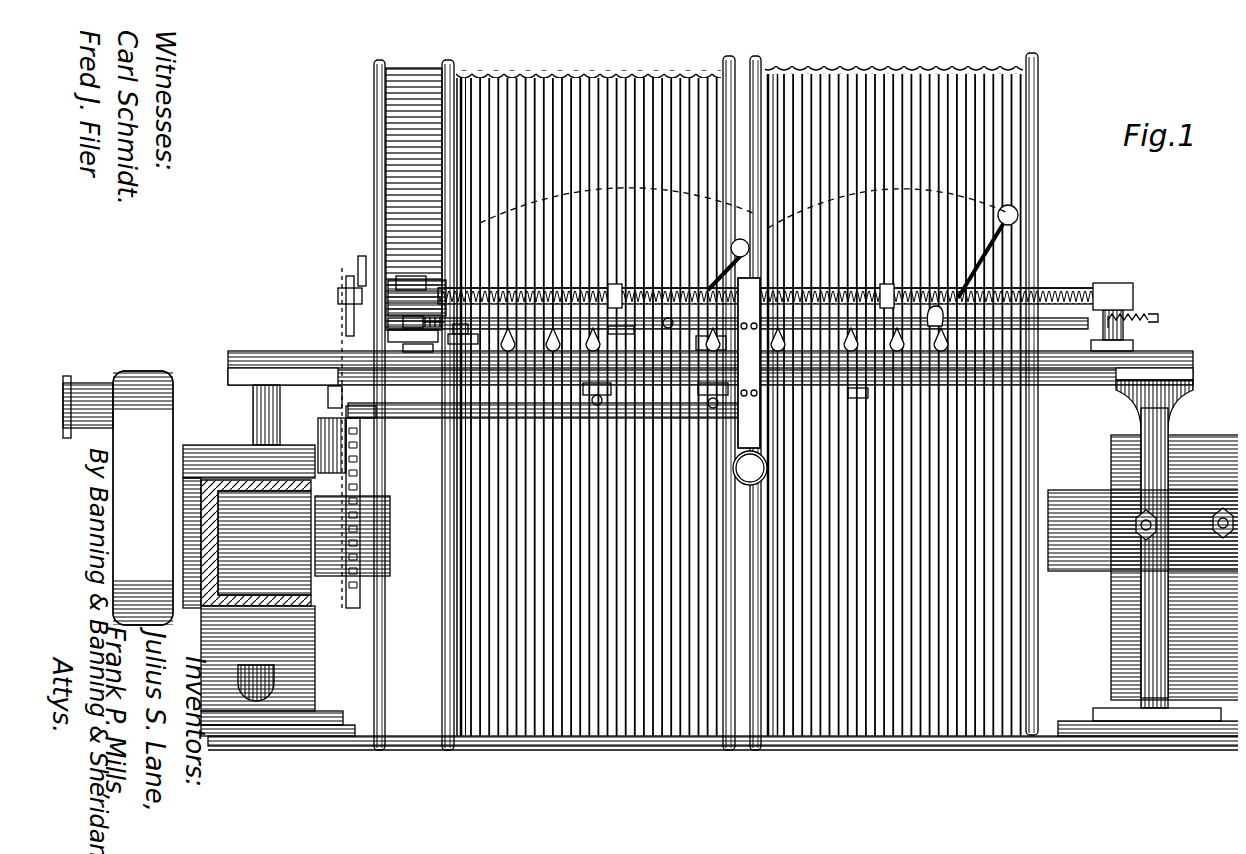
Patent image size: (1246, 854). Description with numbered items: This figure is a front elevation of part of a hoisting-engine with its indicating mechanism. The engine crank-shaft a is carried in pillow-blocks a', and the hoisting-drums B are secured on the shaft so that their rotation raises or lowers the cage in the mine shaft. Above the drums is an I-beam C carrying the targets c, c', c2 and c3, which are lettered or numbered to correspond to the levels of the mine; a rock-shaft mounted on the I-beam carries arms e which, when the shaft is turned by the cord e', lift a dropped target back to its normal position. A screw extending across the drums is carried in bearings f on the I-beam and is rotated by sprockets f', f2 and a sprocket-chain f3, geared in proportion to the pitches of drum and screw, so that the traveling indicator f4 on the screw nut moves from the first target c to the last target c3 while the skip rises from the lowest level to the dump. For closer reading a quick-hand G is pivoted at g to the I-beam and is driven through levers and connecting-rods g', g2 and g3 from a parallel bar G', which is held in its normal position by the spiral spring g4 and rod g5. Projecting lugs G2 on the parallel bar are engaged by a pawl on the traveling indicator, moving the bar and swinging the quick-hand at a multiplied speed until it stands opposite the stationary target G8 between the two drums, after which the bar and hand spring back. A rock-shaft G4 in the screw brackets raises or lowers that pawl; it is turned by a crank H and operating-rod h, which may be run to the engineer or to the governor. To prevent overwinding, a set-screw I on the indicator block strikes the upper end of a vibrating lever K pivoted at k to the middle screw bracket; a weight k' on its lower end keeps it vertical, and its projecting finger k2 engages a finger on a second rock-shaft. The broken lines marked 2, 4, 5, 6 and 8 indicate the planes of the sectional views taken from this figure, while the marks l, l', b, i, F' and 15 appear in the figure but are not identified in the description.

The hoisting-drums B is at (560, 72).
The crank H is at (380, 258).
The I-beam C is at (222, 347).
The projecting finger k2 is at (420, 410).
The crank-shaft a is at (650, 476).
The pillow-blocks a' is at (710, 545).
The lever l is at (332, 445).
The pulley l' is at (212, 498).
The bearings f is at (1125, 293).
The sprocket f' is at (340, 438).
The sprocket f2 is at (336, 292).
The sprocket-chain f3 is at (352, 410).
The traveling indicator f4 is at (925, 296).
The arms e is at (576, 366).
The cord e' is at (320, 405).
The quick-hand G is at (770, 270).
The parallel bar G' is at (435, 289).
The projecting lugs G2 is at (738, 292).
The rock-shaft G4 is at (1048, 266).
The stationary target G8 is at (760, 275).
The pivot g is at (424, 288).
The lever and connecting-rod g' is at (668, 293).
The lever and connecting-rod g2 is at (745, 240).
The lever and connecting-rod g3 is at (455, 338).
The spiral spring g4 is at (405, 336).
The rod g5 is at (420, 346).
The set-screw I is at (751, 281).
The vibrating lever K is at (755, 290).
The pivot k is at (688, 370).
The weight k' is at (845, 437).
The target c is at (712, 370).
The target c' is at (885, 370).
The target c2 is at (840, 348).
The target c3 is at (770, 350).
The roller bracket b is at (593, 400).
The plate i is at (411, 273).
The operating-rod h is at (348, 262).
The standard F' is at (1101, 308).
The section line 15 is at (362, 330).
The section line 6 is at (352, 330).
The section line 8 is at (330, 313).
The section line 4 is at (288, 325).
The section line 5 is at (510, 262).
The section line 2 is at (690, 503).